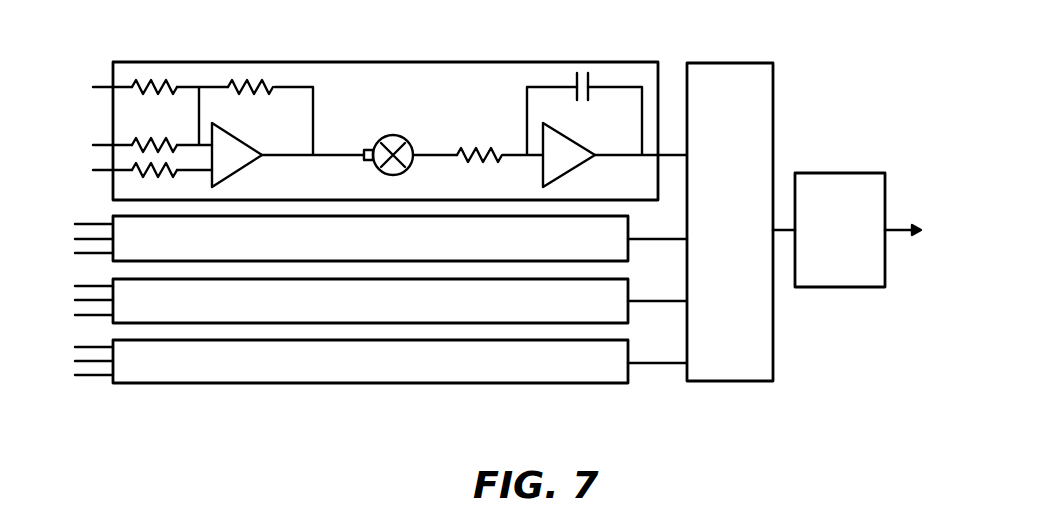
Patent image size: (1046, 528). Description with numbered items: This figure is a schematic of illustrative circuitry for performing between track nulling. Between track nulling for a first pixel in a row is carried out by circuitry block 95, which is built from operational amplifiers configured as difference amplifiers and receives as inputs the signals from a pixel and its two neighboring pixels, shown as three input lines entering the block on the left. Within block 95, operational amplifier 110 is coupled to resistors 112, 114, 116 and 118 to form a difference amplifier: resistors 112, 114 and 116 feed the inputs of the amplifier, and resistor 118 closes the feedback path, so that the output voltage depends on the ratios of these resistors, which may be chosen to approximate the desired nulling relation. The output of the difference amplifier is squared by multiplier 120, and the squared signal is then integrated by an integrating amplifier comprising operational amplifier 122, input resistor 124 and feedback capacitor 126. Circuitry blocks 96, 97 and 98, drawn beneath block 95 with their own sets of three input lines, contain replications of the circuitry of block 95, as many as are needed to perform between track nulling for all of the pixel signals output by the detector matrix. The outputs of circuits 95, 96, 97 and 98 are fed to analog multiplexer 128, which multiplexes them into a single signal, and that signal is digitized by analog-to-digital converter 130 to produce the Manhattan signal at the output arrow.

The circuitry block 95 is at (345, 62).
The circuitry block 96 is at (468, 220).
The circuitry block 97 is at (468, 280).
The circuitry block 98 is at (468, 342).
The operational amplifier 110 is at (247, 167).
The resistor 112 is at (155, 82).
The resistor 114 is at (137, 142).
The resistor 116 is at (142, 168).
The resistor 118 is at (245, 92).
The multiplier 120 is at (405, 135).
The operational amplifier 122 is at (577, 167).
The resistor 124 is at (477, 167).
The feedback capacitor 126 is at (577, 80).
The analog multiplexer 128 is at (773, 93).
The analog-to-digital converter 130 is at (817, 173).